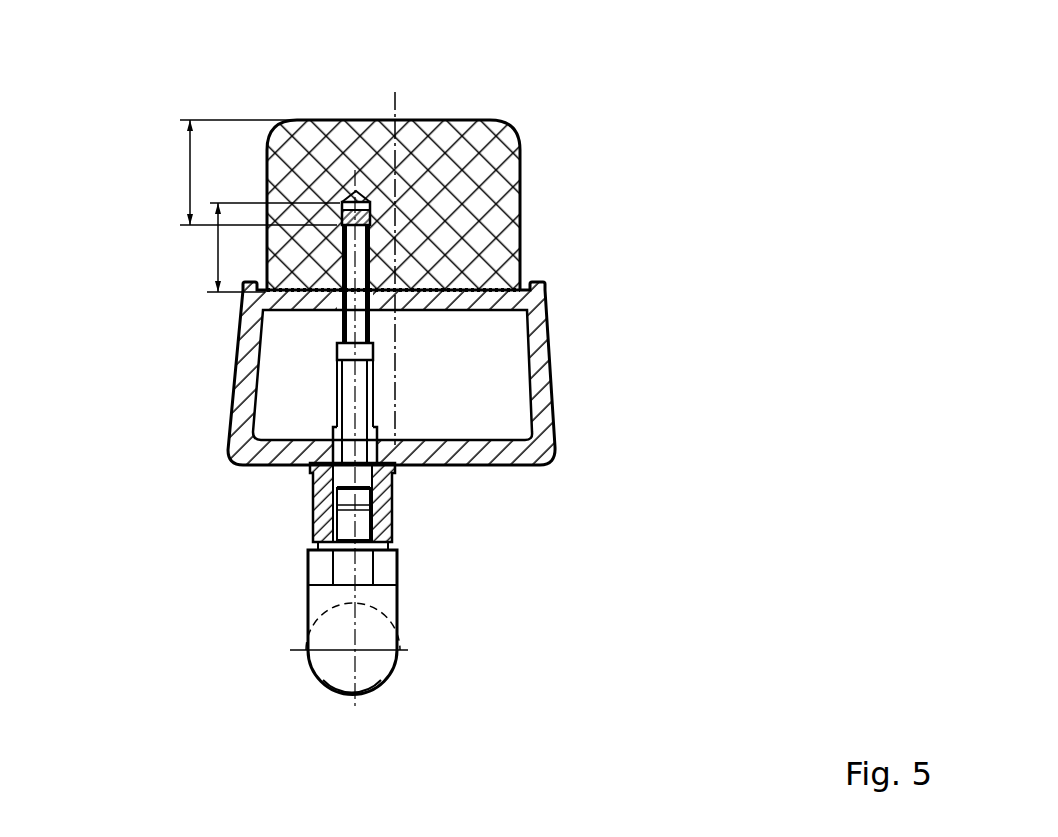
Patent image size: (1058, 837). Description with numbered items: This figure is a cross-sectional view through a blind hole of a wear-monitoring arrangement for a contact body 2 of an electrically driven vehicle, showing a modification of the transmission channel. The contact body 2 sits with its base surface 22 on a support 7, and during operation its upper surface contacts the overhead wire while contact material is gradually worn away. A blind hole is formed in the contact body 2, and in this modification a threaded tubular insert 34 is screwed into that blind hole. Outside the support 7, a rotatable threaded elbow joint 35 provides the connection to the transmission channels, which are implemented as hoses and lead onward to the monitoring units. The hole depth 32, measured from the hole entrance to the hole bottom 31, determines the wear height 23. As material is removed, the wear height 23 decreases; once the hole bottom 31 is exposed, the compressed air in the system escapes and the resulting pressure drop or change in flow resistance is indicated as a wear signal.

The hole bottom 31 is at (368, 198).
The contact body 2 is at (463, 207).
The base surface 22 is at (520, 278).
The support 7 is at (533, 333).
The threaded tubular insert 34 is at (355, 413).
The rotatable threaded elbow joint 35 is at (353, 570).
The wear height 23 is at (183, 173).
The hole depth 32 is at (210, 253).